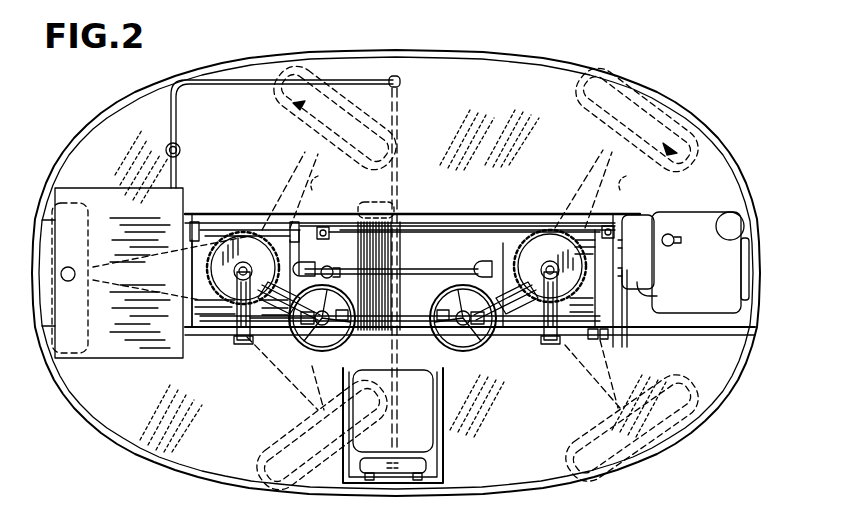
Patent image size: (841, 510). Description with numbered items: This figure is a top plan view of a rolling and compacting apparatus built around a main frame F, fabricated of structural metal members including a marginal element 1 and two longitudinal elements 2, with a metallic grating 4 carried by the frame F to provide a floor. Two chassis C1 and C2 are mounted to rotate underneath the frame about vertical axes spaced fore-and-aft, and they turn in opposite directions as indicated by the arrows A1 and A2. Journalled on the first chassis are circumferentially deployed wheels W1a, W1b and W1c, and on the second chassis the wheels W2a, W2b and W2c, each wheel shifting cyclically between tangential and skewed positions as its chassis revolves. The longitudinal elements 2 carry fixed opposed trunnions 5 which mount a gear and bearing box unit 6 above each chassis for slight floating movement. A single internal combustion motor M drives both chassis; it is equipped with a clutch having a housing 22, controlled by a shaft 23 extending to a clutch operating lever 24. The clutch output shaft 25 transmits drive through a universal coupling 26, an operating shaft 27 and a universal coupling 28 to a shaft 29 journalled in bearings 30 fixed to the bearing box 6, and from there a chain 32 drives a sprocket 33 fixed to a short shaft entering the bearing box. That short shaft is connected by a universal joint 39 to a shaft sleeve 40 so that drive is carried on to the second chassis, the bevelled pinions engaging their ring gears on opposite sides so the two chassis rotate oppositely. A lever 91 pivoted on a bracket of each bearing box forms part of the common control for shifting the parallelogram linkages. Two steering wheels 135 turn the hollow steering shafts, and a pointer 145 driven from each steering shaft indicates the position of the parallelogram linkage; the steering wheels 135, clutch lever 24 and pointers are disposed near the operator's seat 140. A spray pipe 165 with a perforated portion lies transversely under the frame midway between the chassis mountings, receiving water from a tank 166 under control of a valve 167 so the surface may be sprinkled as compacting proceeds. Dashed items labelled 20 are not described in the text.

The marginal element 1 is at (397, 58).
The longitudinal elements 2 is at (427, 214).
The metallic grating 4 is at (519, 120).
The trunnions 5 is at (250, 225).
The gear and bearing box unit 6 is at (210, 240).
The steering linkage 20 is at (592, 392).
The clutch housing 22 is at (658, 295).
The clutch control shaft 23 is at (600, 340).
The clutch operating lever 24 is at (448, 336).
The clutch output shaft 25 is at (649, 252).
The universal coupling 26 is at (606, 226).
The operating shaft 27 is at (455, 224).
The universal coupling 28 is at (326, 227).
The shaft 29 is at (226, 234).
The bearings 30 is at (195, 222).
The chain 32 is at (276, 262).
The sprocket 33 is at (302, 264).
The universal joint 39 is at (324, 280).
The shaft sleeve 40 is at (446, 274).
The lever 91 is at (236, 294).
The steering wheel 135 is at (340, 352).
The operator's seat 140 is at (430, 388).
The pointer 145 is at (484, 264).
The spray pipe 165 is at (398, 90).
The tank 166 is at (104, 190).
The valve 167 is at (181, 146).
The internal combustion motor M is at (703, 212).
The main frame F is at (712, 128).
The arrow A1 is at (345, 130).
The arrow A2 is at (636, 105).
The chassis C1 is at (325, 197).
The chassis C2 is at (575, 225).
The wheel W1a is at (278, 112).
The wheel W1b is at (60, 208).
The wheel W1c is at (262, 447).
The wheel W2a is at (380, 260).
The wheel W2b is at (568, 444).
The wheel W2c is at (590, 130).